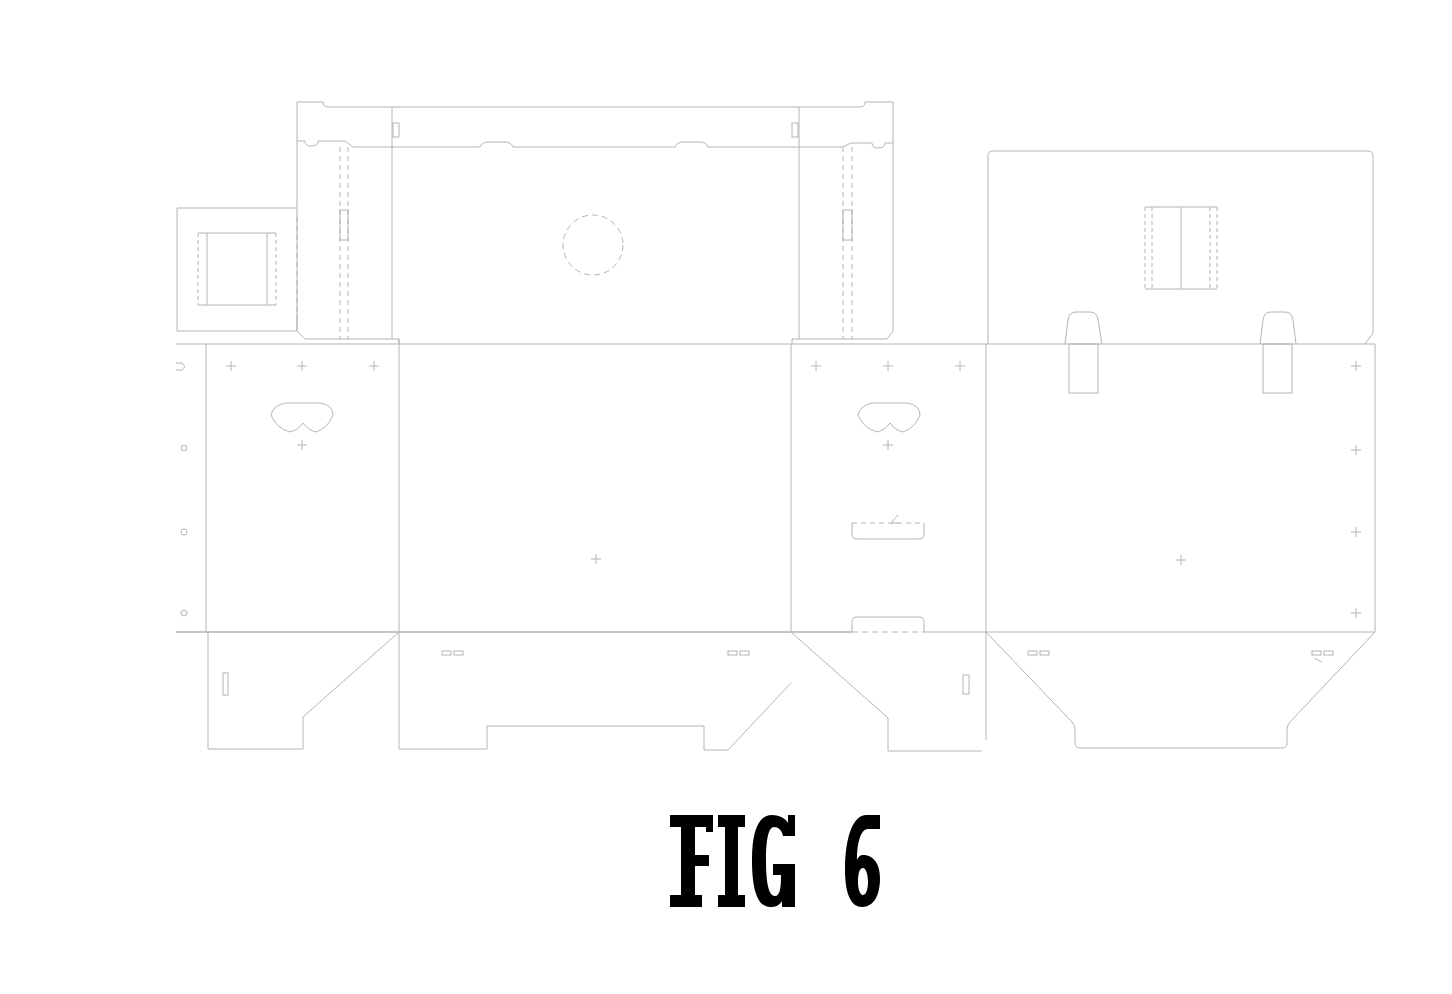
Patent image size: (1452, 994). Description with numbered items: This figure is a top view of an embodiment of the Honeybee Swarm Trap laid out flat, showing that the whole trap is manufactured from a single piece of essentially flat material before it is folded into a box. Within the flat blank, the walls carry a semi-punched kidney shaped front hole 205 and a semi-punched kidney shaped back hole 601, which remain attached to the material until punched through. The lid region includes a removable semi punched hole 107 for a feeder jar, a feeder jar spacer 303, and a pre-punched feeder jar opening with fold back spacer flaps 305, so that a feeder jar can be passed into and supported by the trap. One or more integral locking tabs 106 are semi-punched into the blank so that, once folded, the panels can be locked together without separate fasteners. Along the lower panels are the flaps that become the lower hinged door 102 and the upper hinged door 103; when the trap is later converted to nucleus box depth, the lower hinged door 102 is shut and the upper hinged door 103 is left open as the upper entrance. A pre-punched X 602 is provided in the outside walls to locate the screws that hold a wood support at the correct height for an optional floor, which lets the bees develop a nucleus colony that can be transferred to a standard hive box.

The lower hinged door 102 is at (852, 632).
The upper hinged door 103 is at (880, 539).
The integral locking tab 106 is at (1078, 310).
The removable semi punched hole for feeder jar 107 is at (583, 220).
The semi-punched kidney shaped front hole 205 is at (287, 404).
The feeder jar spacer 303 is at (175, 280).
The pre-punched feeder jar opening with fold back spacer flaps 305 is at (1165, 207).
The semi-punched kidney shaped back hole 601 is at (903, 405).
The pre-punched X 602 is at (596, 559).